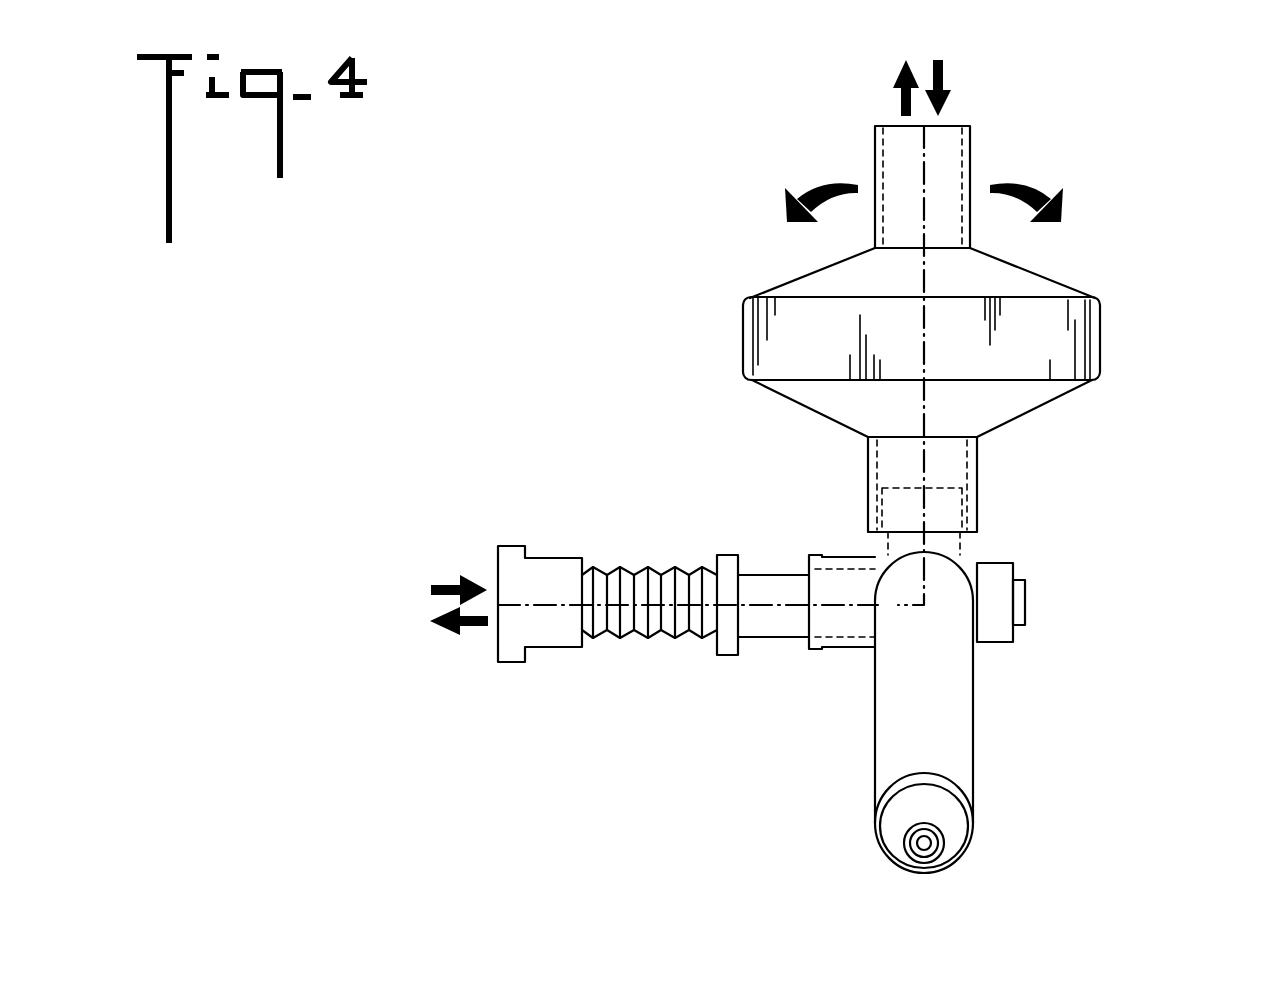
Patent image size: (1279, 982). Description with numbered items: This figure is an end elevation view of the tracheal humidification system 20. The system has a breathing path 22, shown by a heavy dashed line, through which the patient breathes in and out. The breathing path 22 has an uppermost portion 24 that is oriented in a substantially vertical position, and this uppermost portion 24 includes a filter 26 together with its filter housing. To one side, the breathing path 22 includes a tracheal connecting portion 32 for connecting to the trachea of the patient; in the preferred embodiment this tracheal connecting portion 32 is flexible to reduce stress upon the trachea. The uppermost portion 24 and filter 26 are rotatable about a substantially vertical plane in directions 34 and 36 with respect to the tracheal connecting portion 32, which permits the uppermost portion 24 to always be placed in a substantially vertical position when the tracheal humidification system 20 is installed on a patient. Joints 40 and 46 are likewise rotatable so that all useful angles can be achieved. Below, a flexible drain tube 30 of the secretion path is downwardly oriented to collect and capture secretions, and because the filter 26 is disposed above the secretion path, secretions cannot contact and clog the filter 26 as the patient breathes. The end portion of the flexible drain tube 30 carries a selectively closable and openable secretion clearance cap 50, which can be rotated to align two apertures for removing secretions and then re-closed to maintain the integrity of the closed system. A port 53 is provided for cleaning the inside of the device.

The tracheal humidification system 20 is at (841, 466).
The breathing path 22 is at (548, 605).
The uppermost portion 24 is at (910, 340).
The filter 26 is at (1018, 352).
The flexible drain tube 30 is at (994, 712).
The tracheal connecting portion 32 is at (825, 672).
The direction 34 is at (817, 185).
The direction 36 is at (1022, 185).
The joint 40 is at (977, 530).
The joint 46 is at (803, 568).
The secretion clearance cap 50 is at (952, 826).
The port 53 is at (1025, 624).